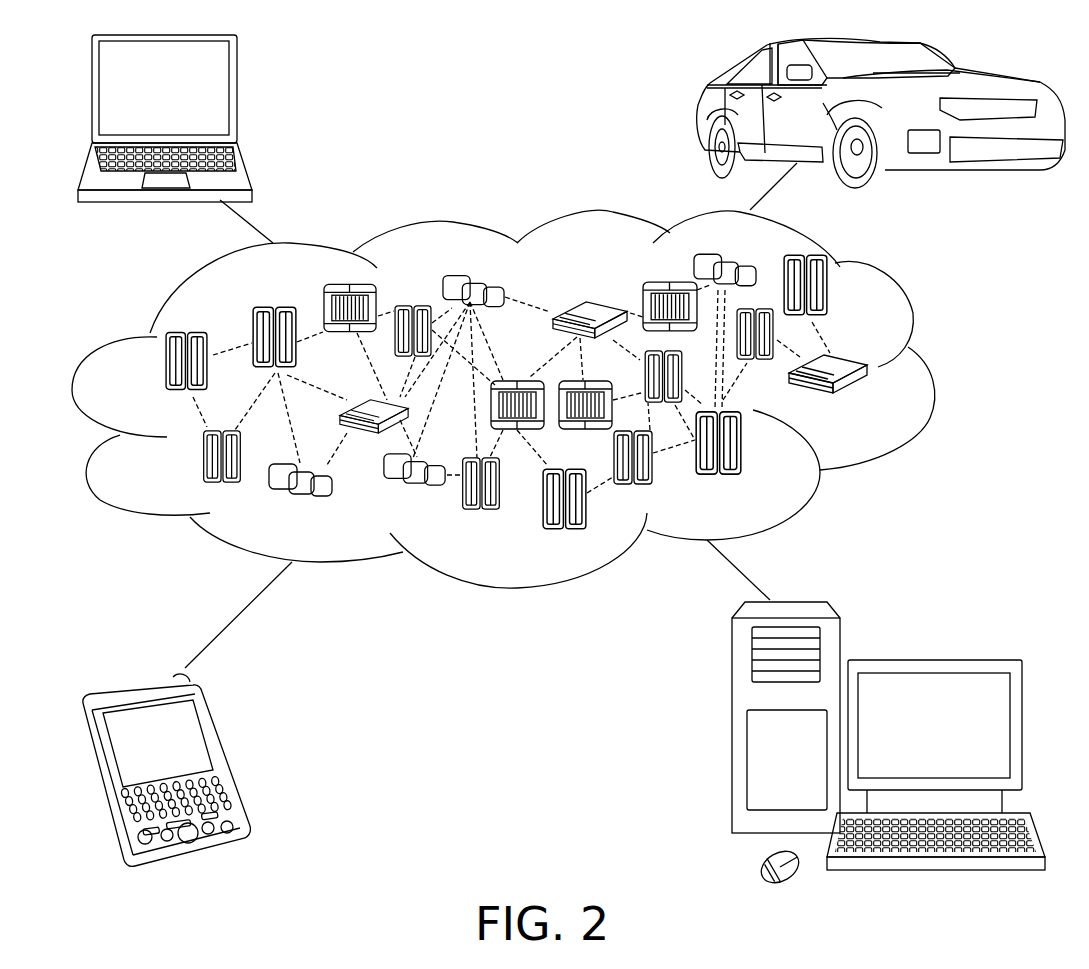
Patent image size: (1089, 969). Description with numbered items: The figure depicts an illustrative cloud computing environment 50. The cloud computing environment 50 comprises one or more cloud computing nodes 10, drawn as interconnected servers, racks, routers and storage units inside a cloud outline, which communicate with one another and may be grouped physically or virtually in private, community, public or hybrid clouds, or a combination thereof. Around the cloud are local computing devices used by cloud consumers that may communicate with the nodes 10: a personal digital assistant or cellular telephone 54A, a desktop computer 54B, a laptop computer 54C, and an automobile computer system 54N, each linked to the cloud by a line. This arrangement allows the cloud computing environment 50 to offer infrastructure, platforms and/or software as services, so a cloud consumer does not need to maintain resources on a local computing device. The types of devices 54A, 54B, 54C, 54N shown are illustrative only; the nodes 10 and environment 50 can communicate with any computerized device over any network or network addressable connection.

The cloud computing nodes 10 is at (568, 462).
The cloud computing environment 50 is at (930, 372).
The personal digital assistant or cellular telephone 54A is at (228, 755).
The desktop computer 54B is at (932, 660).
The laptop computer 54C is at (238, 98).
The automobile computer system 54N is at (698, 112).